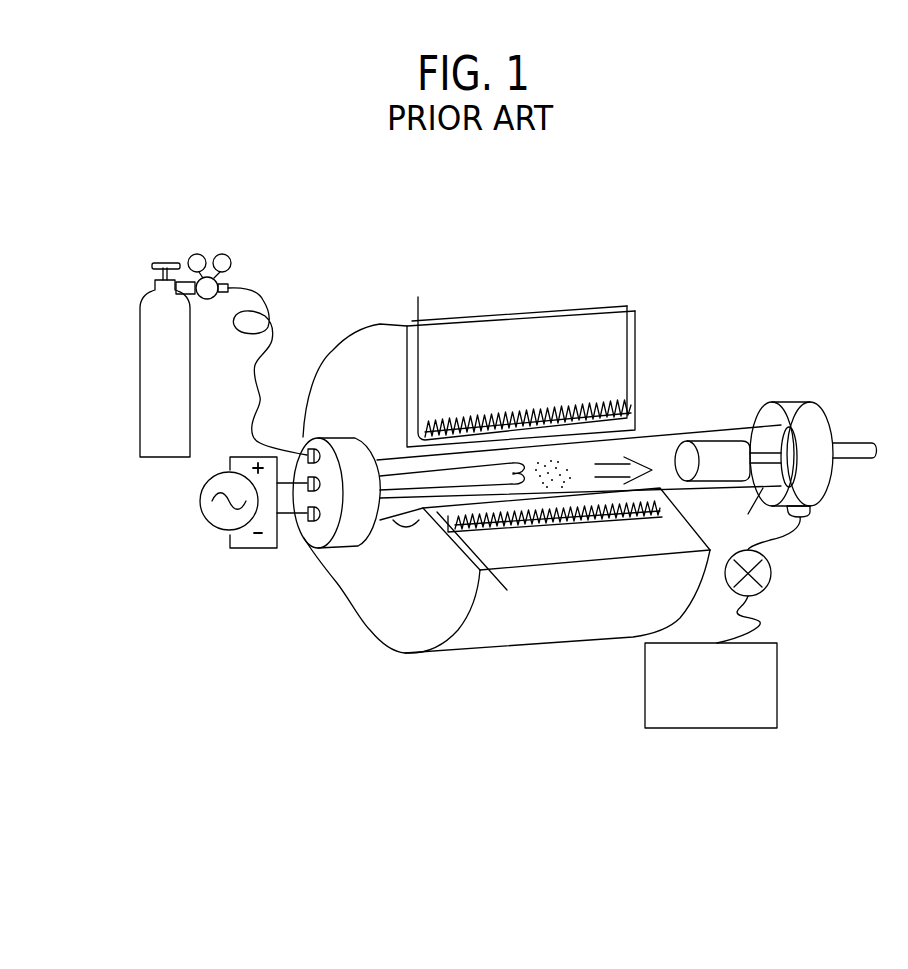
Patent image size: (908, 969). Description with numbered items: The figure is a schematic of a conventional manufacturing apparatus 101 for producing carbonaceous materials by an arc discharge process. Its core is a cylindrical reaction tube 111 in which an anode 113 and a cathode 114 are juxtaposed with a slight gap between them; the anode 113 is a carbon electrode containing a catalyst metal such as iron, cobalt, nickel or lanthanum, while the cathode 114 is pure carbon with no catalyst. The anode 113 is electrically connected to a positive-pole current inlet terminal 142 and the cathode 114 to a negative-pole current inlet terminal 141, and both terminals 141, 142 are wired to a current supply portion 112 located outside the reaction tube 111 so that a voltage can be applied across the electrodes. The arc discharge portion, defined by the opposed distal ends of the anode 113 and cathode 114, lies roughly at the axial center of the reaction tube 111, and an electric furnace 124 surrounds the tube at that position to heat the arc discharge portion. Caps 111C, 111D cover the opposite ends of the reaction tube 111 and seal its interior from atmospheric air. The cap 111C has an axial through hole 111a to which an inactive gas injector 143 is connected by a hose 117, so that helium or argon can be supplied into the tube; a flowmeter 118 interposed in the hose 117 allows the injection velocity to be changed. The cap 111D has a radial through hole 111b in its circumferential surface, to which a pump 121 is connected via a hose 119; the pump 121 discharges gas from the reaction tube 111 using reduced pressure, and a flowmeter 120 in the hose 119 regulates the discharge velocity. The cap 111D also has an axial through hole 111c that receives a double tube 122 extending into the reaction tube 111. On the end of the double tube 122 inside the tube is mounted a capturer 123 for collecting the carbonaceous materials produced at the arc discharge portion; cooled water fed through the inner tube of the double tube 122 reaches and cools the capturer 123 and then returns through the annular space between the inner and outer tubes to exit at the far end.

The manufacturing apparatus 101 is at (704, 232).
The reaction tube 111 is at (668, 433).
The through hole 111a is at (296, 456).
The through hole 111b is at (805, 516).
The through hole 111c is at (736, 514).
The cap 111C is at (357, 533).
The cap 111D is at (797, 403).
The current supply portion 112 is at (200, 503).
The anode 113 is at (519, 462).
The cathode 114 is at (523, 490).
The hose 117 is at (270, 301).
The flowmeter 118 is at (223, 283).
The hose 119 is at (778, 622).
The flowmeter 120 is at (772, 575).
The pump 121 is at (777, 683).
The double tube 122 is at (860, 443).
The capturer 123 is at (720, 436).
The electric furnace 124 is at (563, 410).
The negative-pole current inlet terminal 141 is at (301, 454).
The positive-pole current inlet terminal 142 is at (300, 456).
The inactive gas injector 143 is at (140, 346).